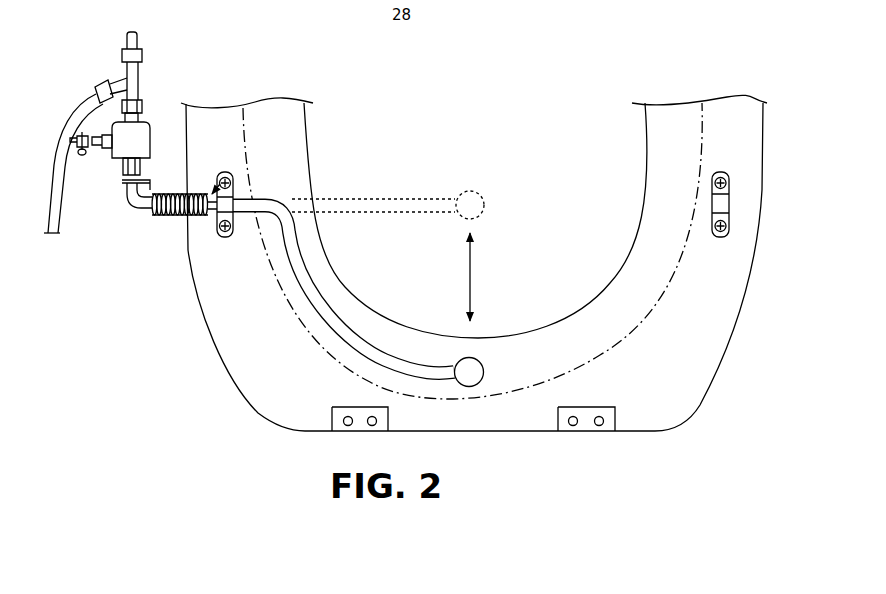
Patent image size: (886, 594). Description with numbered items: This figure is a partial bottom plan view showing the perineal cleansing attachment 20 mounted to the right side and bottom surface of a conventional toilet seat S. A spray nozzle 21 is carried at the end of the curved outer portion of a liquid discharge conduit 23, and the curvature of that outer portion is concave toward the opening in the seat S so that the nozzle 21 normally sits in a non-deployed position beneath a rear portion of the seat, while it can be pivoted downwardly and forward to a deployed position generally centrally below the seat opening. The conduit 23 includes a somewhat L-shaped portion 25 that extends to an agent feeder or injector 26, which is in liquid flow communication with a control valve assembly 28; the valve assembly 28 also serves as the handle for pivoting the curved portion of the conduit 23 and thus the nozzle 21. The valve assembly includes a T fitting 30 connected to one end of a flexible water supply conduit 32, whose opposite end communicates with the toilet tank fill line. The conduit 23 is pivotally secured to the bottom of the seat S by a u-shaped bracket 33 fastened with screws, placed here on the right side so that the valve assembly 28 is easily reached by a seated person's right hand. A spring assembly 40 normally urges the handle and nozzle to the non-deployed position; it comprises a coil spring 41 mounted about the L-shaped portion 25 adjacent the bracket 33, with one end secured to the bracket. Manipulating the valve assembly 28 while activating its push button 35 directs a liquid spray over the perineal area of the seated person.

The toilet seat S is at (226, 347).
The perineal cleansing attachment 20 is at (157, 228).
The spray nozzle 21 is at (480, 205).
The liquid discharge conduit 23 is at (379, 197).
The L-shaped portion 25 is at (129, 207).
The agent feeder or injector 26 is at (148, 146).
The control valve assembly 28 is at (146, 55).
The T fitting 30 is at (140, 78).
The flexible water supply conduit 32 is at (57, 190).
The u-shaped bracket 33 is at (230, 205).
The push button 35 is at (128, 41).
The spring assembly 40 is at (178, 193).
The coil spring 41 is at (198, 212).